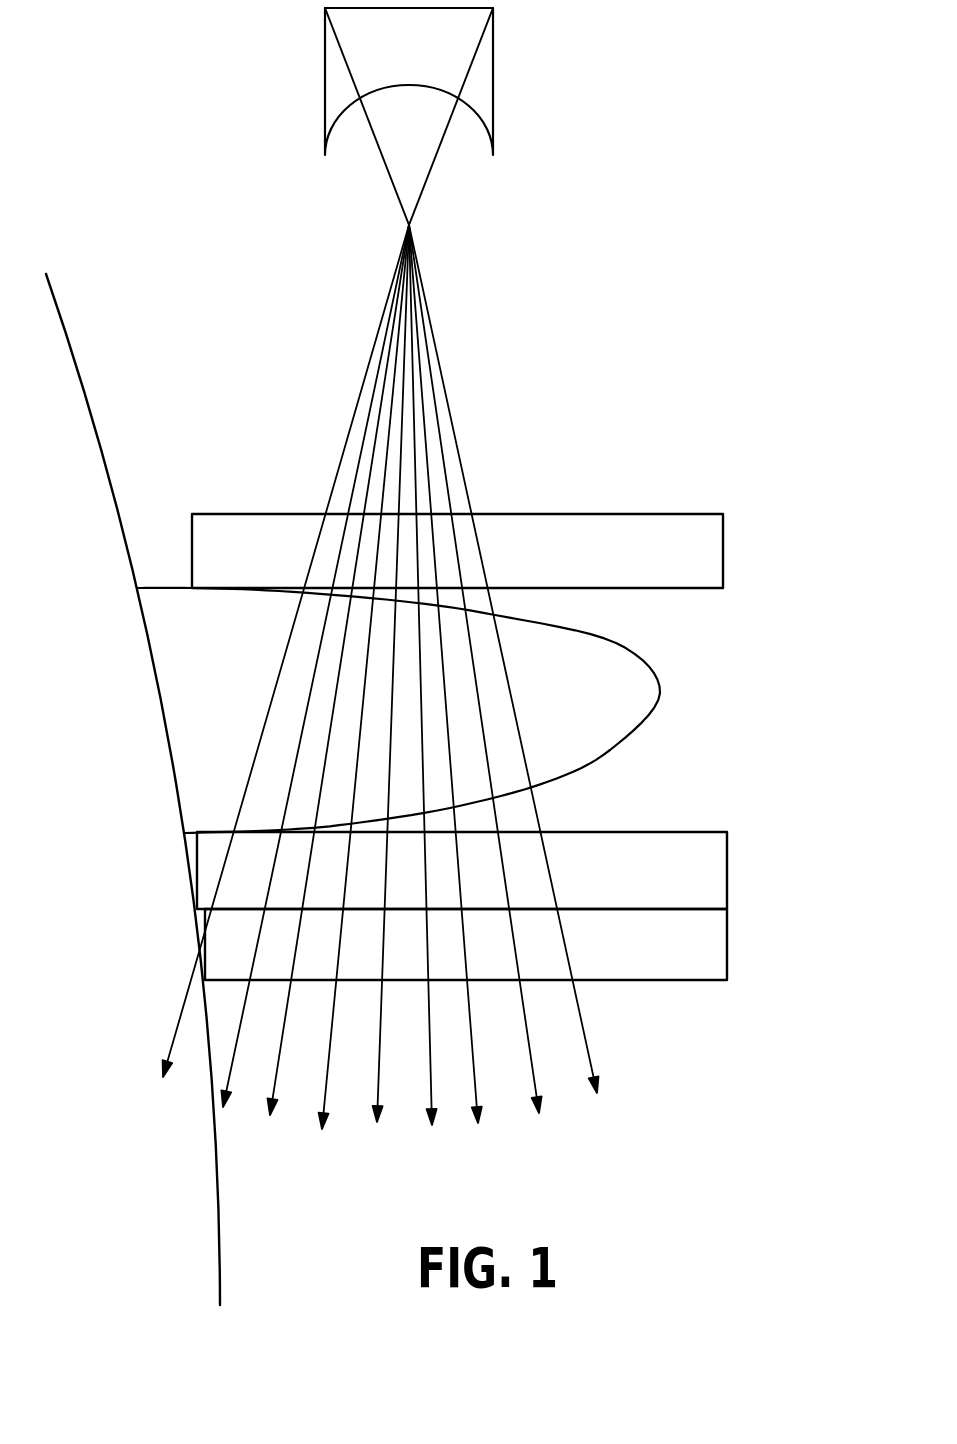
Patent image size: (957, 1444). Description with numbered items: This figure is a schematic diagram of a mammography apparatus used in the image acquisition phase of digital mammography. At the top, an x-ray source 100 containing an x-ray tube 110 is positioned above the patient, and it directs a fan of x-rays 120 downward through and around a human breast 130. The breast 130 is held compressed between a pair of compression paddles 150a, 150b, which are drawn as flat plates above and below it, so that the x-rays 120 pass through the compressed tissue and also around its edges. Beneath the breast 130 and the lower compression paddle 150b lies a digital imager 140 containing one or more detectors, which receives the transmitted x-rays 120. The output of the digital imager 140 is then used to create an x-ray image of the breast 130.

The x-ray source 100 is at (493, 129).
The x-ray tube 110 is at (360, 97).
The x-rays 120 is at (387, 302).
The human breast 130 is at (618, 652).
The digital imager 140 is at (729, 965).
The compression paddle 150a is at (724, 556).
The compression paddle 150b is at (729, 903).